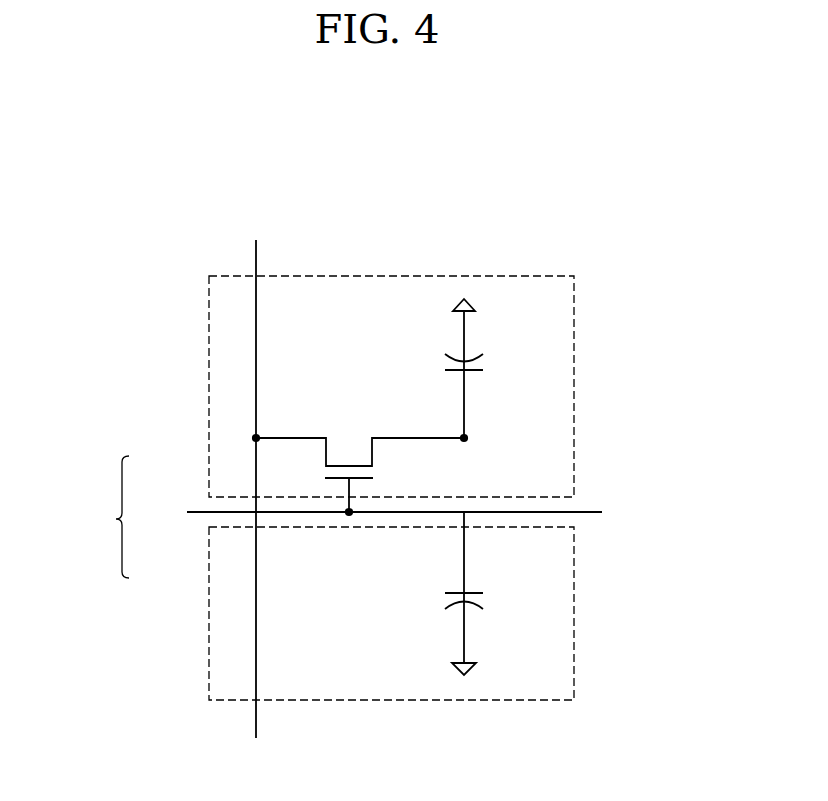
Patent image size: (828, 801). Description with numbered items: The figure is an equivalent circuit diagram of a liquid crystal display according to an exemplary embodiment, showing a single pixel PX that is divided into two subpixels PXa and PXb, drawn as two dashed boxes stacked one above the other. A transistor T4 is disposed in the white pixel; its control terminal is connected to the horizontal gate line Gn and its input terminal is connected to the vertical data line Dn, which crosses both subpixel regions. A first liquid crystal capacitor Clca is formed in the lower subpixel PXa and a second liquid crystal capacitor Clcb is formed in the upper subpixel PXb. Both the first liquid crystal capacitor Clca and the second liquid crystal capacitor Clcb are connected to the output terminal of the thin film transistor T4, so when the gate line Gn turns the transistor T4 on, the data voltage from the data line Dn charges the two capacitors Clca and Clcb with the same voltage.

The data line Dn is at (254, 473).
The gate line Gn is at (408, 512).
The transistor T4 is at (360, 462).
The second liquid crystal capacitor Clcb is at (487, 368).
The first liquid crystal capacitor Clca is at (487, 593).
The pixel PX is at (108, 517).
The subpixel PXb is at (209, 465).
The subpixel PXa is at (209, 569).